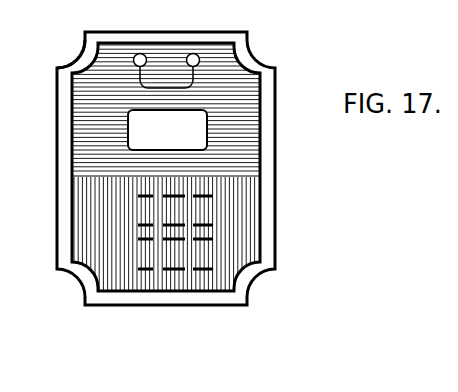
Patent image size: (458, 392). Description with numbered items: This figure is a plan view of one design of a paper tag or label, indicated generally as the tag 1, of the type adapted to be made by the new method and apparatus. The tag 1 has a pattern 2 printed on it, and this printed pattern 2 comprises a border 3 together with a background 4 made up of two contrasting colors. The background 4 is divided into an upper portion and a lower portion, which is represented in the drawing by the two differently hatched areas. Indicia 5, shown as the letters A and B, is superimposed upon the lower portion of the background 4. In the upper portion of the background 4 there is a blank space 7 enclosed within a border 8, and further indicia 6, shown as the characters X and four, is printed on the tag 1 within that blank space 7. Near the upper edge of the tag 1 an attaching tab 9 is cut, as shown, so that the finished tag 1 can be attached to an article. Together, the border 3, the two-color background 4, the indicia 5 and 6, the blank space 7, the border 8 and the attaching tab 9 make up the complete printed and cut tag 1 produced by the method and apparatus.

The tag 1 is at (93, 27).
The pattern 2 is at (261, 100).
The border 3 is at (260, 252).
The background 4 is at (72, 83).
The indicia 5 is at (113, 213).
The indicia 6 is at (131, 123).
The blank space 7 is at (128, 135).
The border 8 is at (240, 137).
The attaching tab 9 is at (168, 63).